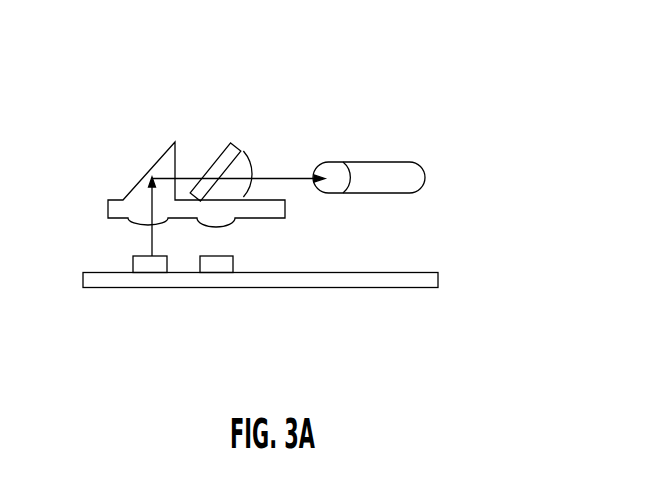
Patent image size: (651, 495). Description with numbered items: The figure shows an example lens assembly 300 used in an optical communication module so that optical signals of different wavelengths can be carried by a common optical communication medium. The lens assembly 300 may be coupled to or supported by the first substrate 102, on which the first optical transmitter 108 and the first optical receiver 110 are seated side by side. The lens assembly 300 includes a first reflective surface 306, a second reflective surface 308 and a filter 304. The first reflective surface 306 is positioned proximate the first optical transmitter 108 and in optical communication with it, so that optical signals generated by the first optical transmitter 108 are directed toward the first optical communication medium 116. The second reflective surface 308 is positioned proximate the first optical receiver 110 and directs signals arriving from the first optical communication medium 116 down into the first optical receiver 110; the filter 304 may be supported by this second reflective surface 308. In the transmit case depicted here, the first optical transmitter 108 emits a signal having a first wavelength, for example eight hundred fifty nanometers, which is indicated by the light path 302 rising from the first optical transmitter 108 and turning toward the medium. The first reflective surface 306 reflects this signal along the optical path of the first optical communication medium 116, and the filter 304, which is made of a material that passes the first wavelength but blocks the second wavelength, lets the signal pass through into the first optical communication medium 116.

The lens assembly 300 is at (292, 63).
The first substrate 102 is at (352, 293).
The first optical transmitter 108 is at (148, 263).
The first optical receiver 110 is at (215, 263).
The light beam 302 is at (148, 235).
The filter 304 is at (204, 180).
The first reflective surface 306 is at (141, 180).
The second reflective surface 308 is at (220, 158).
The first optical communication medium 116 is at (377, 162).